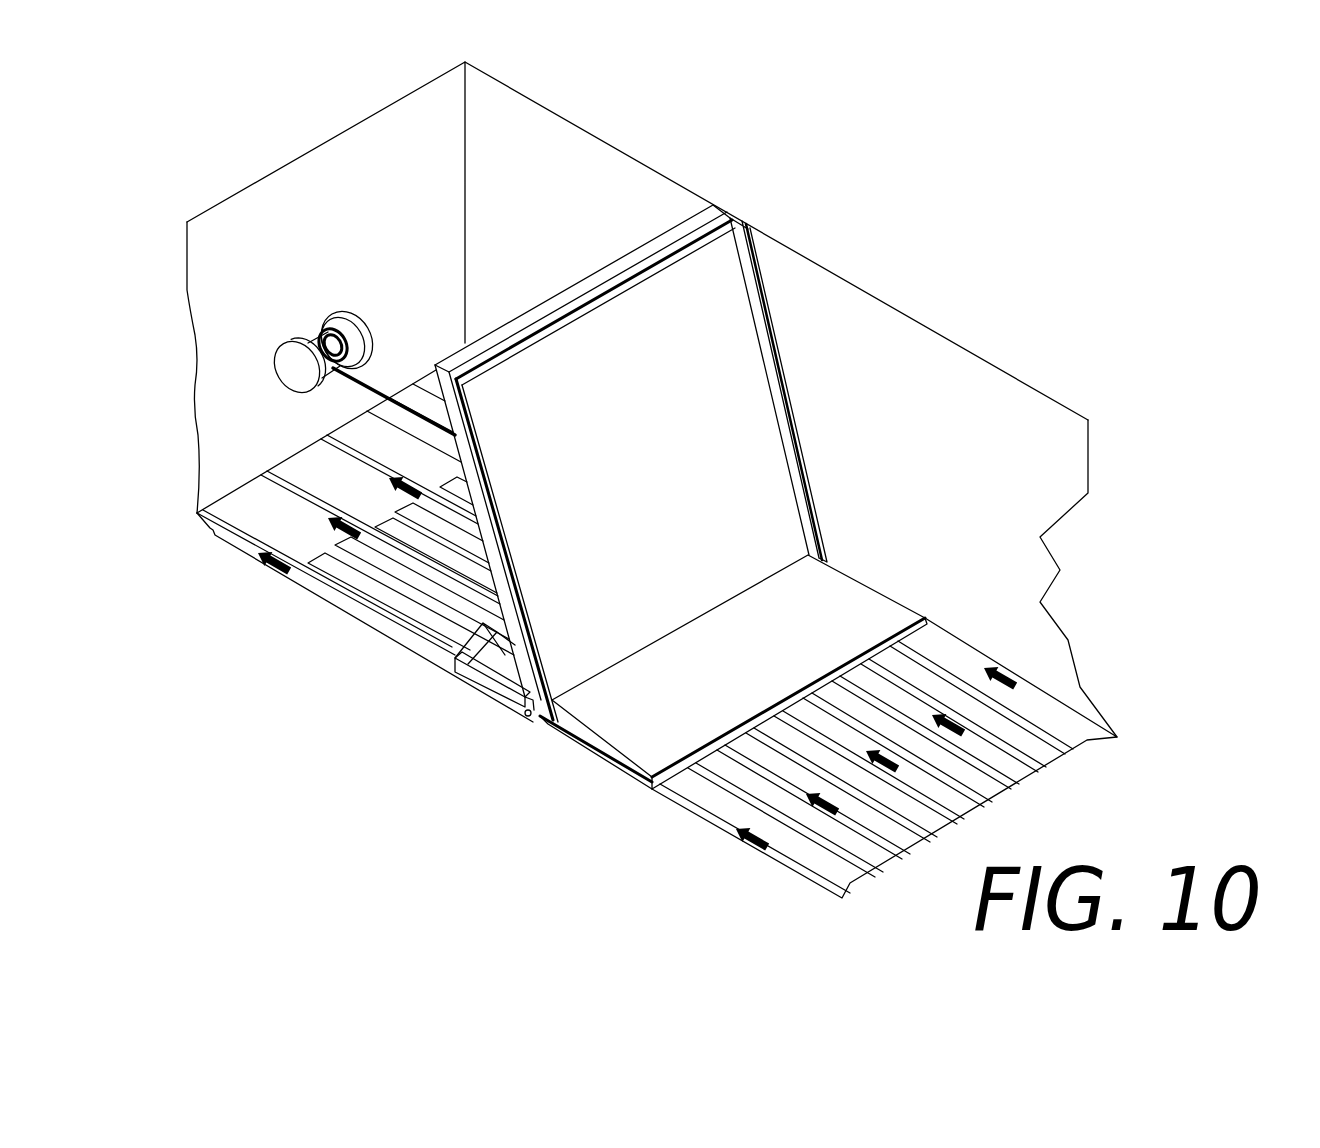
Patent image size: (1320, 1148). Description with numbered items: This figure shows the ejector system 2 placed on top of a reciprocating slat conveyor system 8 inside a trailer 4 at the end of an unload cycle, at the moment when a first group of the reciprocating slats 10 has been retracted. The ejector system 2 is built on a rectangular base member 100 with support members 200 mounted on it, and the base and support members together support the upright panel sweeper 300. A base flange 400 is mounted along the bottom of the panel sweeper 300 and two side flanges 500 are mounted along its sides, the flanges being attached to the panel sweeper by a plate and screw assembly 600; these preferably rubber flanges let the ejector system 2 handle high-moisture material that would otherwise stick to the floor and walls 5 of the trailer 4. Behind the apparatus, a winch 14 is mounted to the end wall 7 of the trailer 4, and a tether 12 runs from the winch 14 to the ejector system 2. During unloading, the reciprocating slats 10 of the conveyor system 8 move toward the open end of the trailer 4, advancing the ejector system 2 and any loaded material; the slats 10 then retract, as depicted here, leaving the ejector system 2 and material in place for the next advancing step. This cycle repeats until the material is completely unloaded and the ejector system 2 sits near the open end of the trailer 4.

The ejector system 2 is at (835, 371).
The trailer 4 is at (1010, 373).
The walls 5 is at (1013, 463).
The end wall 7 is at (369, 232).
The reciprocating slat conveyor system 8 is at (1027, 673).
The reciprocating slats 10 is at (790, 857).
The tether 12 is at (360, 352).
The winch 14 is at (318, 328).
The rectangular base member 100 is at (482, 683).
The support members 200 is at (463, 642).
The panel sweeper 300 is at (600, 438).
The base flange 400 is at (723, 666).
The side flanges 500 is at (797, 428).
The plate and screw assembly 600 is at (530, 716).